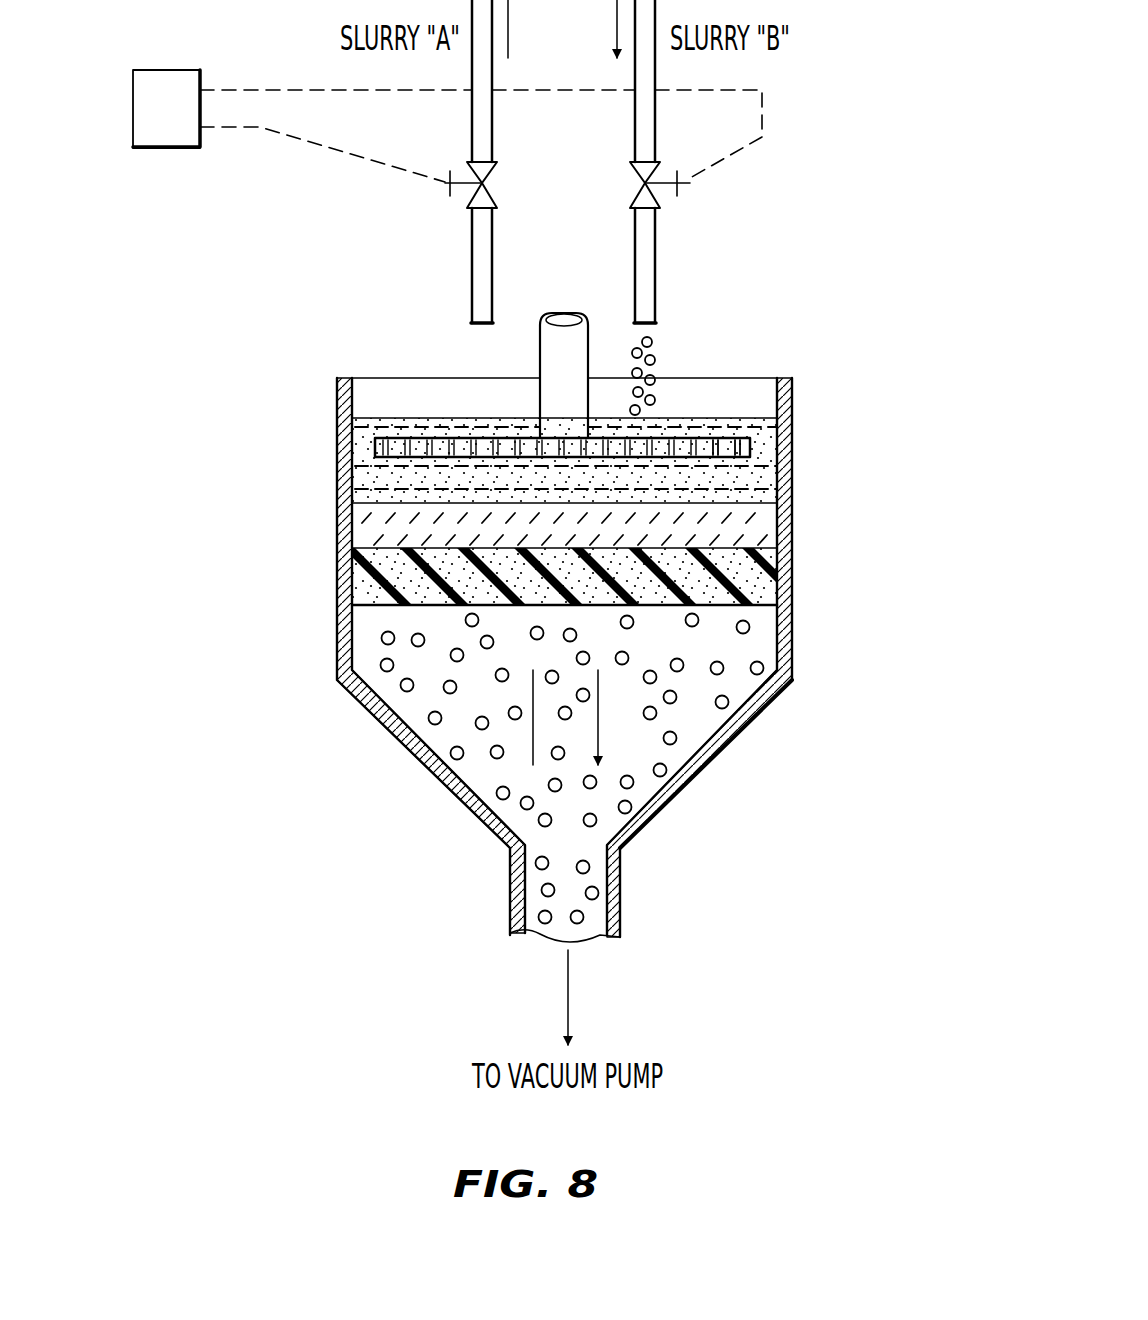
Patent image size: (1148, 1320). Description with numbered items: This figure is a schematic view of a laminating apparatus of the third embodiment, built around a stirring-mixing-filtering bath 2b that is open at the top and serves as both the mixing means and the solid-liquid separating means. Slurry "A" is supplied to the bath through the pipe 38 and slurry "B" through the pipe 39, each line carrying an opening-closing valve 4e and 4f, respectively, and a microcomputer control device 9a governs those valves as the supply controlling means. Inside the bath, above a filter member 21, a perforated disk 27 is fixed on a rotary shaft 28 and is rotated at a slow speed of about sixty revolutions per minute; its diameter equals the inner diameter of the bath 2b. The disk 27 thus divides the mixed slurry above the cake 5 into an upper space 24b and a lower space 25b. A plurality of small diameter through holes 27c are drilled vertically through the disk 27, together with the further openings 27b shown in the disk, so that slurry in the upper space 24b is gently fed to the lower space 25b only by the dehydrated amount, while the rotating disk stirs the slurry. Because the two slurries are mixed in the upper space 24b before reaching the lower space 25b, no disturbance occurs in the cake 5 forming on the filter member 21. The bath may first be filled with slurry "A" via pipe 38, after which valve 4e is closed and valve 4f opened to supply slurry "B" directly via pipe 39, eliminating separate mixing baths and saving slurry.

The microcomputer control device 9a is at (160, 150).
The opening-closing valve 4e is at (470, 207).
The opening-closing valve 4f is at (657, 206).
The pipe 38 is at (475, 302).
The pipe 39 is at (650, 292).
The rotary shaft 28 is at (558, 327).
The upper space 24b is at (378, 418).
The lower space 25b is at (360, 478).
The cake 5 is at (358, 530).
The filter member 21 is at (358, 588).
The perforated disk 27 is at (750, 447).
The small diameter through holes 27c is at (716, 447).
The perforation 27b is at (728, 447).
The stirring-mixing-filtering bath 2b is at (800, 531).